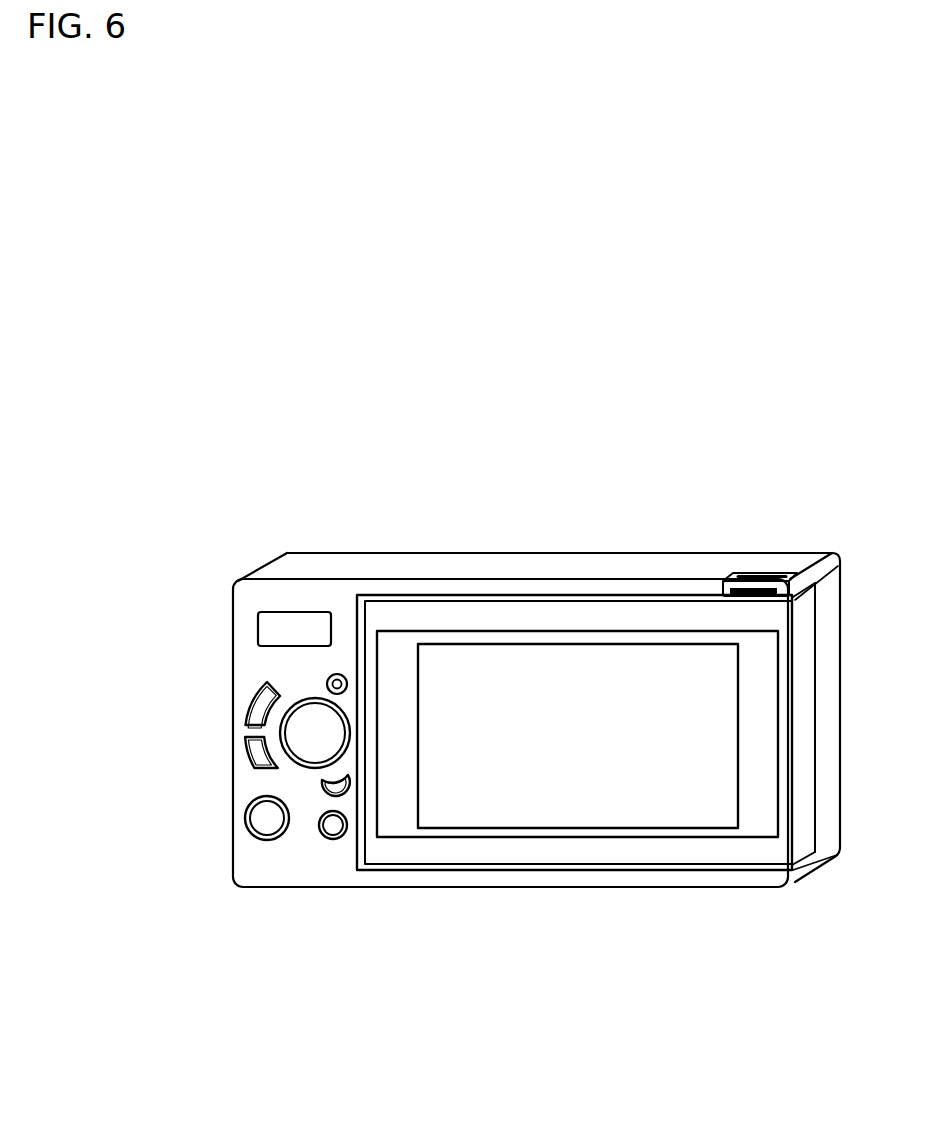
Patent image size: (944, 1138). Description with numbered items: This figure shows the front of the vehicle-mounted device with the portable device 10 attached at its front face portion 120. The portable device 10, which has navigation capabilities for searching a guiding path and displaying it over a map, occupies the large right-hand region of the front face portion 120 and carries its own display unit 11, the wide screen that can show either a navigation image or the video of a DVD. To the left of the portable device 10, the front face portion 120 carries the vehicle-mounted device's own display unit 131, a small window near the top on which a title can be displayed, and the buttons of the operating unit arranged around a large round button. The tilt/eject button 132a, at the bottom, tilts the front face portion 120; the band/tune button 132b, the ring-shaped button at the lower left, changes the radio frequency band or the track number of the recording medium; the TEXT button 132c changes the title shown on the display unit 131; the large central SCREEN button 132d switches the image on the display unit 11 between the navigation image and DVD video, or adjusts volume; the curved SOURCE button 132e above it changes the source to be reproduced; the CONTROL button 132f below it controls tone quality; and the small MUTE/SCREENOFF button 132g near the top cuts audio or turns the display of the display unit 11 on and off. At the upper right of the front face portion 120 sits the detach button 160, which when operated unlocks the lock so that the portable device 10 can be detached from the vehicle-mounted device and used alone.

The portable device 10 is at (757, 857).
The display unit 11 is at (658, 810).
The front face portion 120 is at (285, 568).
The display unit 131 is at (270, 628).
The tilt/eject button 132a is at (328, 837).
The band/tune button 132b is at (263, 820).
The TEXT button 132c is at (333, 785).
The SCREEN button 132d is at (330, 728).
The SOURCE button 132e is at (260, 708).
The CONTROL button 132f is at (257, 752).
The MUTE/SCREENOFF button 132g is at (348, 682).
The detach button 160 is at (762, 582).